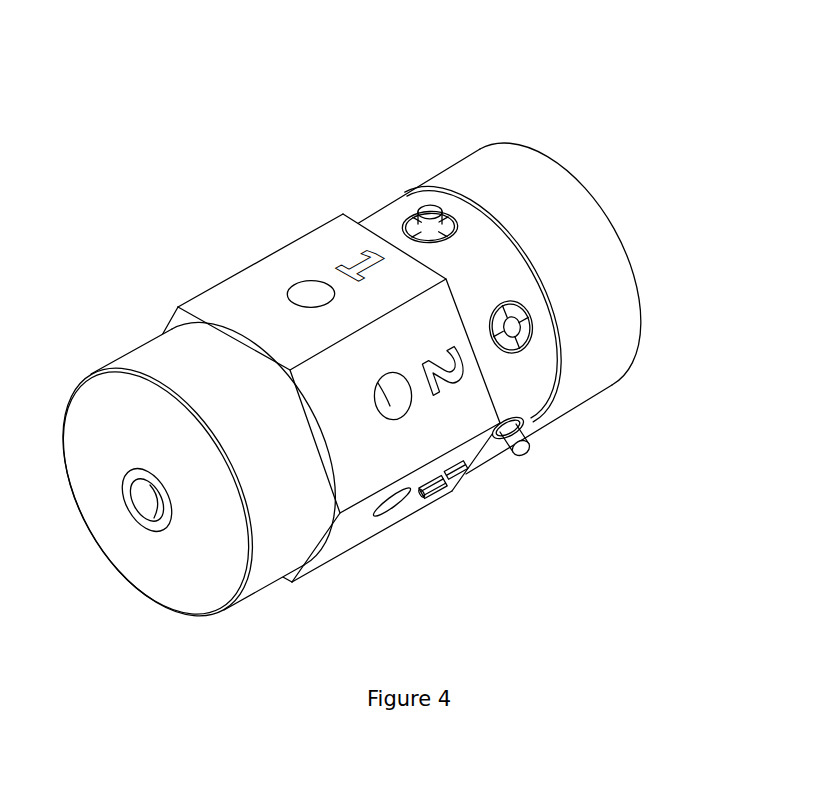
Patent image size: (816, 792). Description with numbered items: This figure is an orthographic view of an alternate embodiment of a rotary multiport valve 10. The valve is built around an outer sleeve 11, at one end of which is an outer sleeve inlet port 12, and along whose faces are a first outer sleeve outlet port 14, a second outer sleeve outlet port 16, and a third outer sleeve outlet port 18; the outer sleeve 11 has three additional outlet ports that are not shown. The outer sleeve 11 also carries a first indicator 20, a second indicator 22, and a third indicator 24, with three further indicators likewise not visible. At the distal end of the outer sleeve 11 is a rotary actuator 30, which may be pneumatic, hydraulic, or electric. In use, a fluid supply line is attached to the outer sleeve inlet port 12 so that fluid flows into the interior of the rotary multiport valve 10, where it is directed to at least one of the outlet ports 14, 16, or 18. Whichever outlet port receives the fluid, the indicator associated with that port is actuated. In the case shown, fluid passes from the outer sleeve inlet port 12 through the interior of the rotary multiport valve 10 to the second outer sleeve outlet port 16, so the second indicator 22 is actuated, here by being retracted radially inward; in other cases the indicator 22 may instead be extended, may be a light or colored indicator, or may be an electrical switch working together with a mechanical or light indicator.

The rotary multiport valve 10 is at (205, 192).
The outer sleeve 11 is at (170, 360).
The outer sleeve inlet port 12 is at (150, 503).
The first outer sleeve outlet port 14 is at (313, 290).
The second outer sleeve outlet port 16 is at (393, 401).
The third outer sleeve outlet port 18 is at (400, 504).
The first indicator 20 is at (431, 212).
The second indicator 22 is at (527, 322).
The third indicator 24 is at (528, 447).
The rotary actuator 30 is at (567, 202).